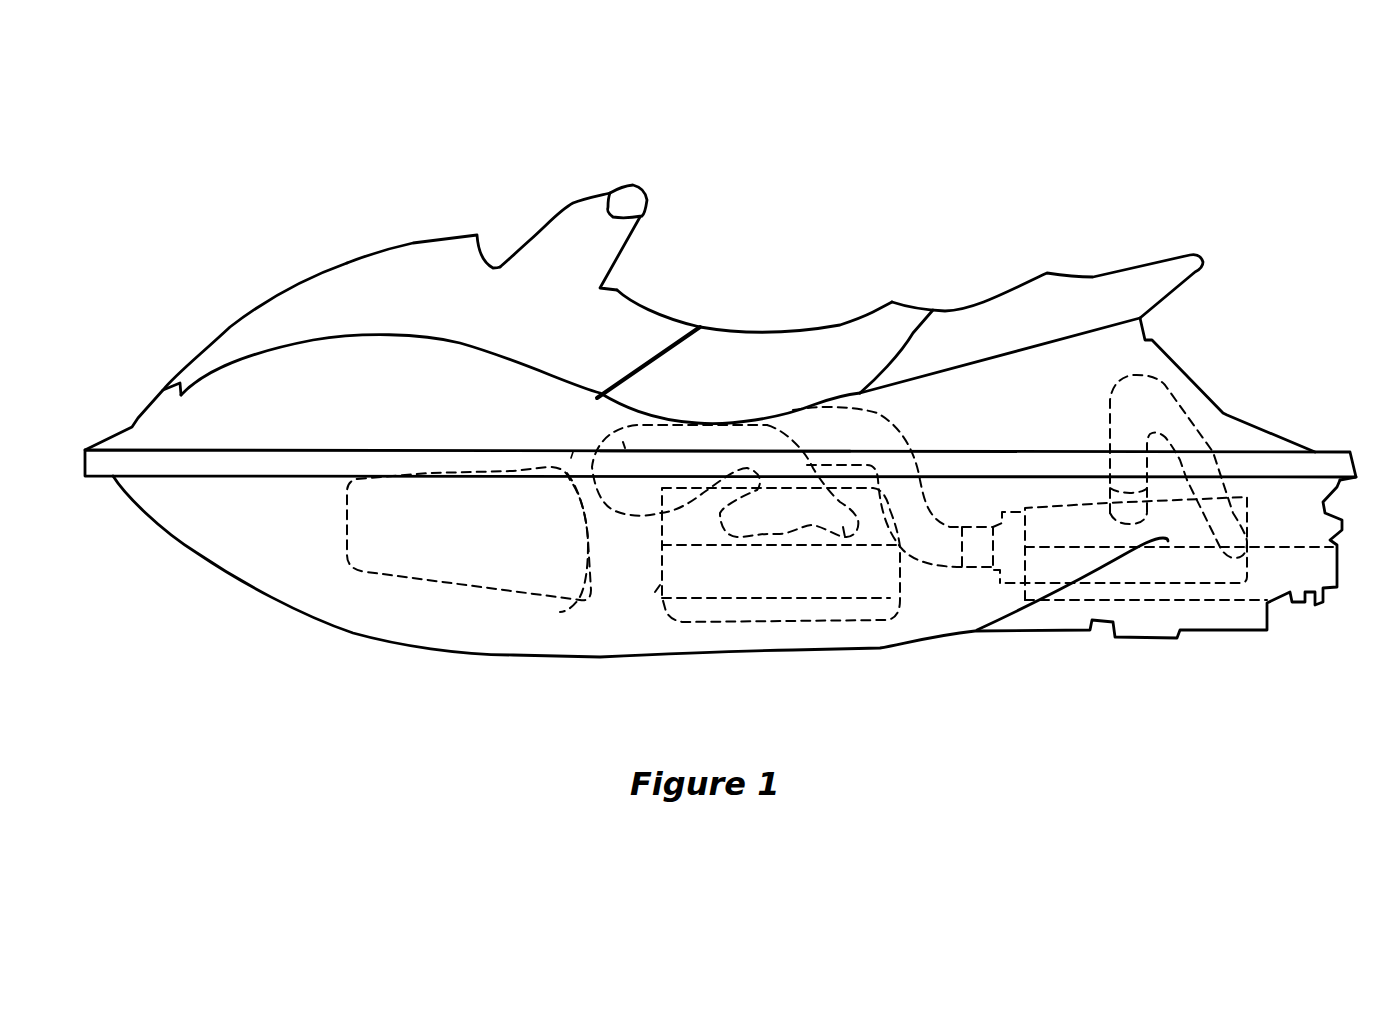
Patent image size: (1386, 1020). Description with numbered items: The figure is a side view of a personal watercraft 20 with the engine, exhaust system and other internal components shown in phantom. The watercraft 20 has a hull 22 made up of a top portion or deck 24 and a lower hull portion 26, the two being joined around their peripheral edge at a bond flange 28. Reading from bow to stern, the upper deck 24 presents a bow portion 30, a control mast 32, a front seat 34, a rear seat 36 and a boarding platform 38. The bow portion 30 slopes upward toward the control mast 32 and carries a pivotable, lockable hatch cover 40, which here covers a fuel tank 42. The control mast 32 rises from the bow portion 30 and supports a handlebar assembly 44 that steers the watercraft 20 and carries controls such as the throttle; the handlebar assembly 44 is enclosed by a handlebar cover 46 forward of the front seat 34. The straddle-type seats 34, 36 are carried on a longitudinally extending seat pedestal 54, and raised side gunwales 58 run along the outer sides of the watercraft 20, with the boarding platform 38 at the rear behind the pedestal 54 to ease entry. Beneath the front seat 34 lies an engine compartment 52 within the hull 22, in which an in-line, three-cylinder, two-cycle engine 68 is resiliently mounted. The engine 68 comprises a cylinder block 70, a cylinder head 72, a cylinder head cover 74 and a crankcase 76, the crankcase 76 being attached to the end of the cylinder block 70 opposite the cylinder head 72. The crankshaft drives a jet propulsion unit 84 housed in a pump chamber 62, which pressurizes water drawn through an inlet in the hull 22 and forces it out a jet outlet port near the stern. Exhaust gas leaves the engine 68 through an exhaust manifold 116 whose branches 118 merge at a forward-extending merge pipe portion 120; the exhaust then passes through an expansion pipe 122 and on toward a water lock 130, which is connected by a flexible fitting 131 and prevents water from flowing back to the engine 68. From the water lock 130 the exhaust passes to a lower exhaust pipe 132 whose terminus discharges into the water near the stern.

The personal watercraft 20 is at (1178, 147).
The hull 22 is at (438, 215).
The deck 24 is at (262, 372).
The lower hull portion 26 is at (203, 537).
The bond flange 28 is at (571, 458).
The bow portion 30 is at (327, 265).
The control mast 32 is at (638, 195).
The front seat 34 is at (873, 312).
The rear seat 36 is at (1028, 250).
The boarding platform 38 is at (1310, 407).
The hatch cover 40 is at (397, 247).
The fuel tank 42 is at (383, 573).
The handlebar assembly 44 is at (623, 187).
The handlebar cover 46 is at (573, 203).
The engine compartment 52 is at (578, 600).
The seat pedestal 54 is at (990, 385).
The gunwales 58 is at (724, 450).
The pump chamber 62 is at (1195, 605).
The engine 68 is at (722, 630).
The cylinder block 70 is at (655, 592).
The cylinder head 72 is at (693, 530).
The cylinder head cover 74 is at (685, 470).
The crankcase 76 is at (903, 612).
The jet propulsion unit 84 is at (1138, 600).
The exhaust manifold 116 is at (788, 553).
The branches 118 is at (843, 527).
The merge pipe portion 120 is at (773, 463).
The expansion pipe 122 is at (623, 442).
The water lock 130 is at (1017, 587).
The flexible fitting 131 is at (975, 563).
The lower exhaust pipe 132 is at (1173, 393).